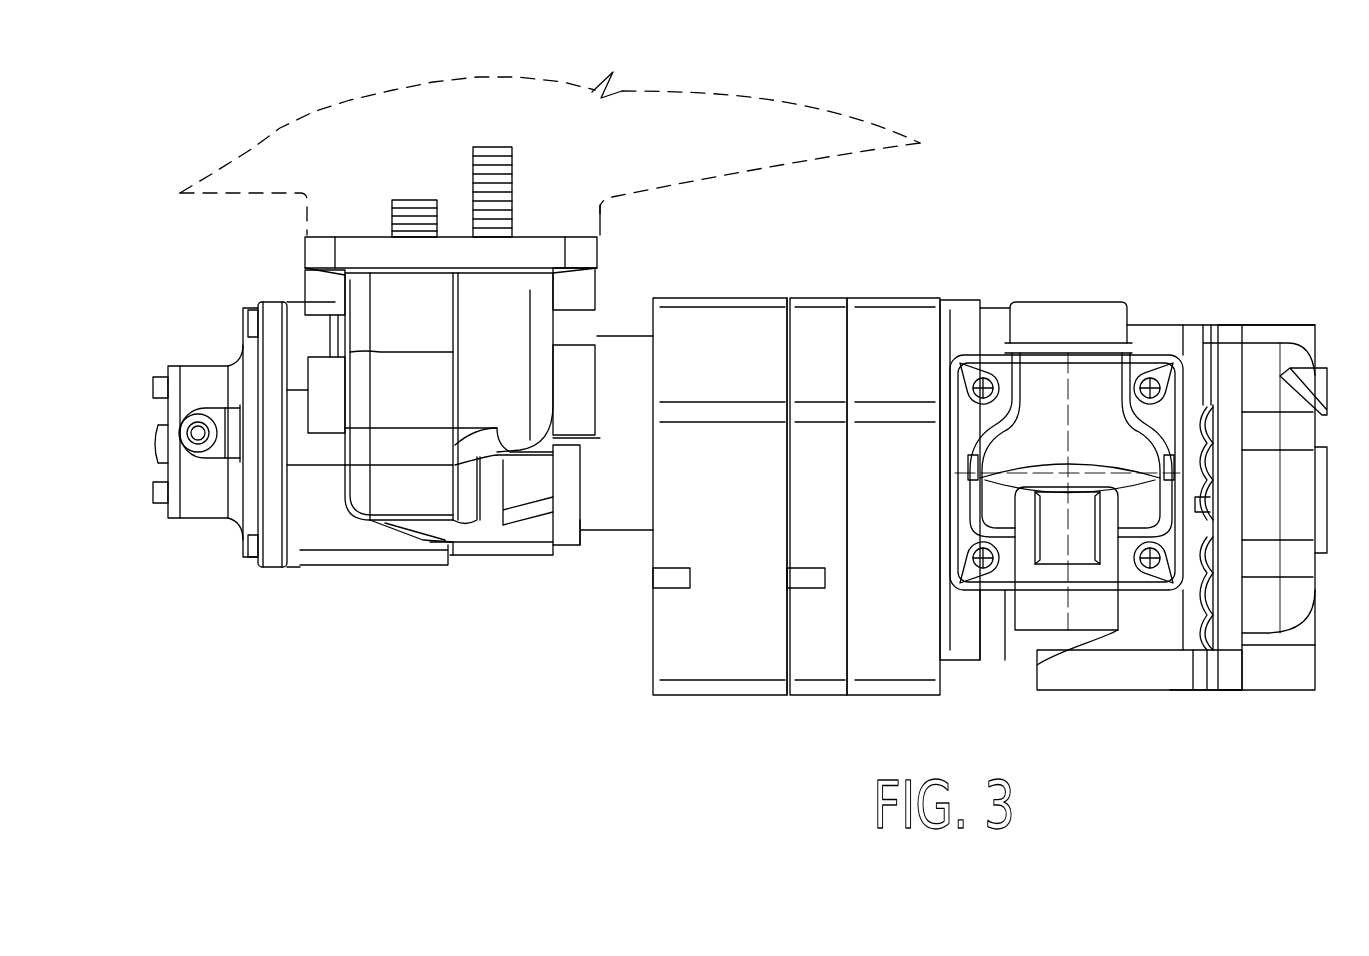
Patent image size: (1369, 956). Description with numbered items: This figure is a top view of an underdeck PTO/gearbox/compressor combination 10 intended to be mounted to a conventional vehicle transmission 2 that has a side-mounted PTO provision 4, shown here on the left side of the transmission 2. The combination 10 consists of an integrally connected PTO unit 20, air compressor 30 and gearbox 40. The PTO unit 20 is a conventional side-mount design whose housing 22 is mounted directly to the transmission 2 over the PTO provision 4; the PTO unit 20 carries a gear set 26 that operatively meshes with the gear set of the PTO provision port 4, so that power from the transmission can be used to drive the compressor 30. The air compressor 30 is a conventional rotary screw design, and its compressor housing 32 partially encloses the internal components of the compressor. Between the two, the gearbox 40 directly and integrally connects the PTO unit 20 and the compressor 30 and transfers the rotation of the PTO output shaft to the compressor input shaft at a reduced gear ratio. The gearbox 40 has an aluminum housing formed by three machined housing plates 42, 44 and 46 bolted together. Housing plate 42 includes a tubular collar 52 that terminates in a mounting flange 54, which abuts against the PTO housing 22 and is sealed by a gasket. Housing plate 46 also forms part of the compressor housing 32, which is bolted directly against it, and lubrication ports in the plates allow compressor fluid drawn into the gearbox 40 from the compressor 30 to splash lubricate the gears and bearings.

The transmission 2 is at (328, 130).
The PTO provision 4 is at (600, 213).
The PTO/gearbox/compressor combination 10 is at (1043, 230).
The PTO unit 20 is at (402, 385).
The PTO housing 22 is at (297, 300).
The gear set 26 is at (512, 190).
The air compressor 30 is at (1133, 449).
The compressor housing 32 is at (1068, 281).
The gearbox 40 is at (759, 463).
The housing plate 42 is at (715, 320).
The housing plate 44 is at (820, 320).
The housing plate 46 is at (892, 322).
The tubular collar 52 is at (616, 520).
The mounting flange 54 is at (556, 548).